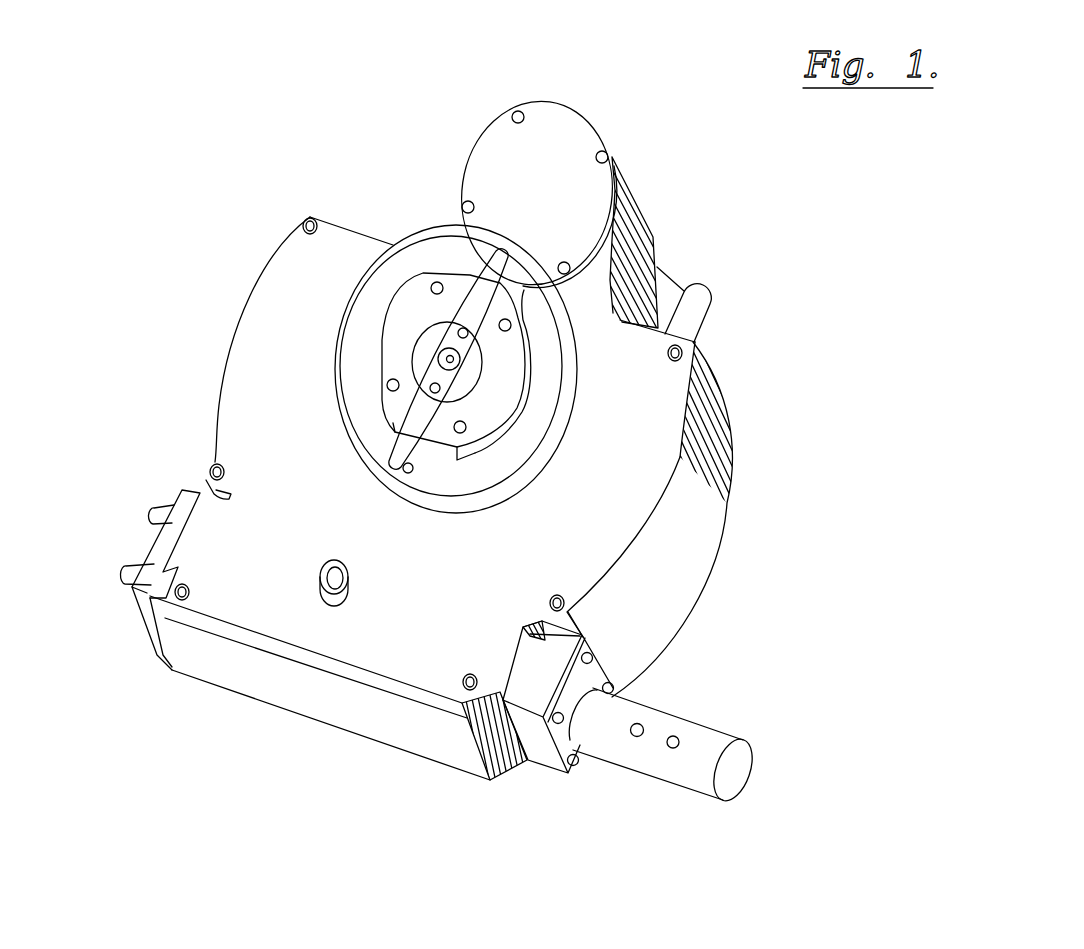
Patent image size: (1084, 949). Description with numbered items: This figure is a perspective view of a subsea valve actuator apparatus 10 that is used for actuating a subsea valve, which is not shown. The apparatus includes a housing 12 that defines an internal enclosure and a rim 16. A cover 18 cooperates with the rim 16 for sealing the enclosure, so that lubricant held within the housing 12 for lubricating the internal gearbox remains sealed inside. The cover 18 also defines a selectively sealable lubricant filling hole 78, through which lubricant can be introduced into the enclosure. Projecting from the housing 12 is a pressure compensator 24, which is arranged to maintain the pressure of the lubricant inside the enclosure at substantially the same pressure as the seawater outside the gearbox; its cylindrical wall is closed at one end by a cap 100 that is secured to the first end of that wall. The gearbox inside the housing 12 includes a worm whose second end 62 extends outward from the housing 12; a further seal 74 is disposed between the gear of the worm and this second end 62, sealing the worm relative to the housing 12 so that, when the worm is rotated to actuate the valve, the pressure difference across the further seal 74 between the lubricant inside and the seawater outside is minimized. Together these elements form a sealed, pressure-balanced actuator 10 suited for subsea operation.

The subsea valve actuator apparatus 10 is at (608, 57).
The housing 12 is at (650, 438).
The rim 16 is at (642, 573).
The cover 18 is at (392, 582).
The pressure compensator 24 is at (435, 145).
The second end of the worm 62 is at (700, 750).
The further seal 74 is at (563, 732).
The selectively sealable lubricant filling hole 78 is at (320, 578).
The cap 100 is at (575, 213).